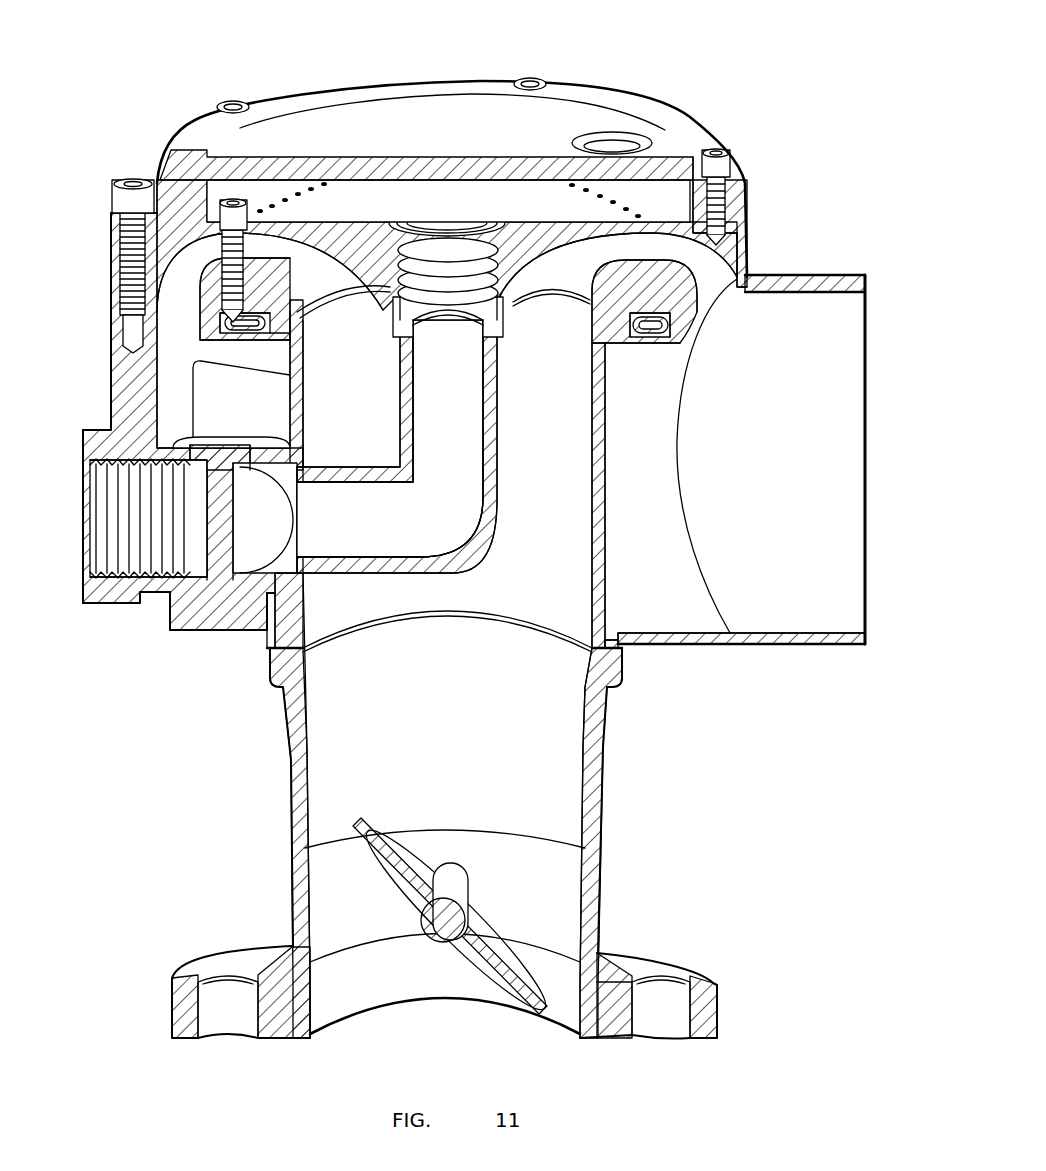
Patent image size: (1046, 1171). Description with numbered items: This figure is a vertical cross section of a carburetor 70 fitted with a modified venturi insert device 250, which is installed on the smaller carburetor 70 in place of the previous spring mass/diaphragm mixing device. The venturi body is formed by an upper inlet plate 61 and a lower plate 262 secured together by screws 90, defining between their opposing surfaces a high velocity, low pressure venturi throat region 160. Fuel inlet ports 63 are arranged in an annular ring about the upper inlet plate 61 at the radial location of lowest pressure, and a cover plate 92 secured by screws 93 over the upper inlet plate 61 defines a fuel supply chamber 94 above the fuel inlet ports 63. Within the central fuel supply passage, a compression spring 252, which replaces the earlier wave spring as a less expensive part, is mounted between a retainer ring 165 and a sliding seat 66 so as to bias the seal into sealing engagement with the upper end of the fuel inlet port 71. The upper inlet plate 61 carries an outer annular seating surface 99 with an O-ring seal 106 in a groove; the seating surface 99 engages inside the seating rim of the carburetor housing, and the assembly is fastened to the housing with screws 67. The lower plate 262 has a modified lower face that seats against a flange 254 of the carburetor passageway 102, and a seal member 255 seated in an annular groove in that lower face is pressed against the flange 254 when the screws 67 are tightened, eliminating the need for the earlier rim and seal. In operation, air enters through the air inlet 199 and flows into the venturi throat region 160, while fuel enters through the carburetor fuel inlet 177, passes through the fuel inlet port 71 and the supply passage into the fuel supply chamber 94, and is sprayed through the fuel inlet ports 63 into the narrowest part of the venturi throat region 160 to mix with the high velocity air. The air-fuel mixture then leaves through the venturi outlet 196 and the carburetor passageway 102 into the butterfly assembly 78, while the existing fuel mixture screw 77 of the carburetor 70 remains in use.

The venturi insert device 250 is at (620, 78).
The cover plate 92 is at (307, 100).
The fuel inlet ports 63 is at (613, 222).
The screws 93 is at (727, 167).
The screws 67 is at (128, 203).
The screws 90 is at (230, 255).
The venturi throat region 160 is at (243, 260).
The fuel supply chamber 94 is at (377, 207).
The retainer ring 165 is at (510, 227).
The sliding seat 66 is at (405, 310).
The compression spring 252 is at (457, 293).
The venturi outlet 196 is at (334, 312).
The upper inlet plate 61 is at (520, 263).
The fuel inlet port 71 is at (413, 423).
The carburetor outlet passageway 102 is at (587, 470).
The flange 254 is at (627, 347).
The seal member 255 is at (653, 332).
The lower plate 262 is at (673, 300).
The O-ring seal 106 is at (743, 292).
The carburetor 70 is at (643, 673).
The seating surface 99 is at (158, 272).
The carburetor fuel inlet 177 is at (78, 492).
The fuel mixture screw 77 is at (227, 630).
The butterfly assembly 78 is at (616, 824).
The air inlet 199 is at (808, 593).